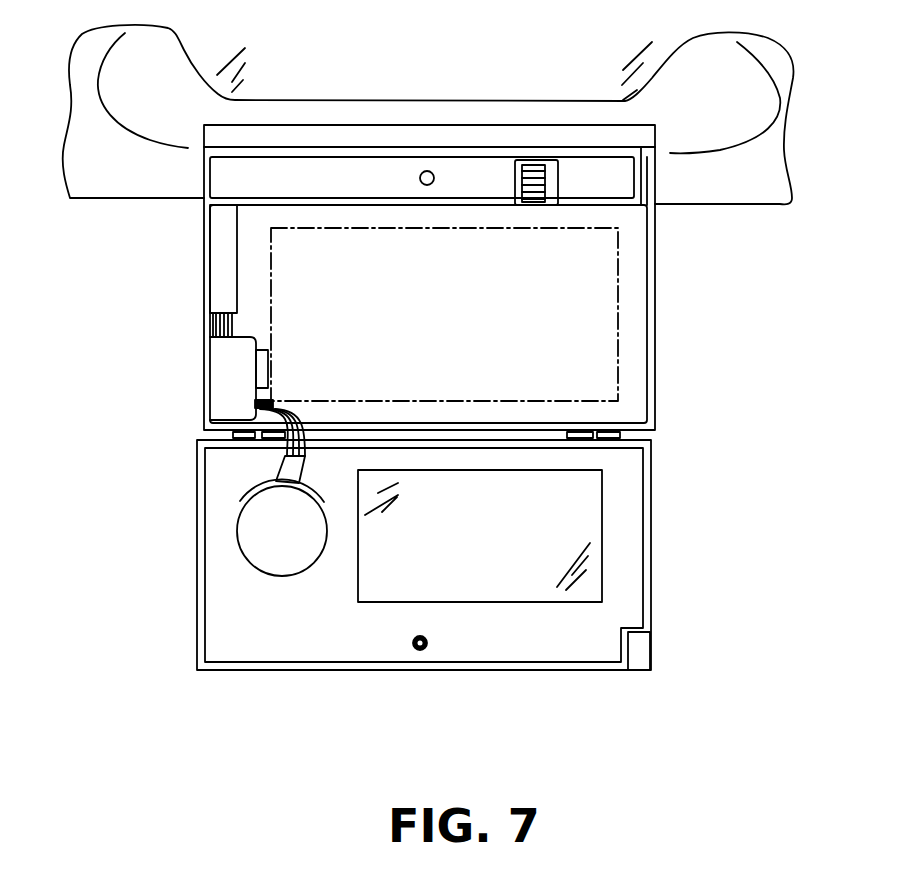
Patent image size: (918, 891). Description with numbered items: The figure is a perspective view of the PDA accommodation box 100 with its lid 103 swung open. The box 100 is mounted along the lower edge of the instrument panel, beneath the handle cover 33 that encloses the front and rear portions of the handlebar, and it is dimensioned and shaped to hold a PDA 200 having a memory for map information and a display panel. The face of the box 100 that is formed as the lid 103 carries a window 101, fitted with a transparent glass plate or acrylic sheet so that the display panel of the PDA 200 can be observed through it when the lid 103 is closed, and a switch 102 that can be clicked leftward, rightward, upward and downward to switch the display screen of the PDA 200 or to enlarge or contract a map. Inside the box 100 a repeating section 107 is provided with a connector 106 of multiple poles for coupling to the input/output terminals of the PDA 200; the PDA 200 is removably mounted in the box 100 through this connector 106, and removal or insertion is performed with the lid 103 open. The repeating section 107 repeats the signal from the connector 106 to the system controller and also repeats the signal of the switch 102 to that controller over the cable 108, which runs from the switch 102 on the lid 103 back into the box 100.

The handle cover 33 is at (740, 192).
The box 100 is at (178, 274).
The PDA 200 is at (617, 337).
The repeating section 107 is at (220, 365).
The connector 106 is at (258, 378).
The cable 108 is at (275, 470).
The switch 102 is at (270, 535).
The lid 103 is at (242, 638).
The window 101 is at (583, 498).